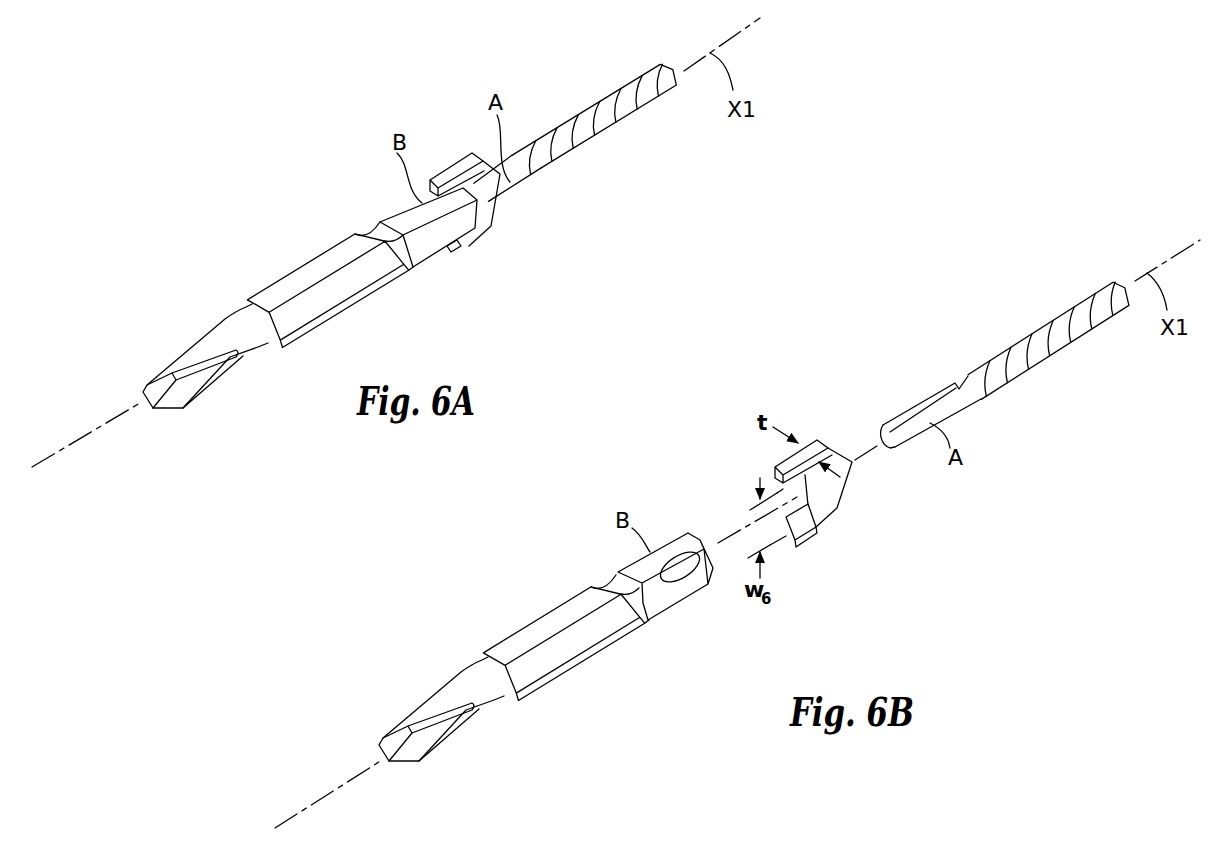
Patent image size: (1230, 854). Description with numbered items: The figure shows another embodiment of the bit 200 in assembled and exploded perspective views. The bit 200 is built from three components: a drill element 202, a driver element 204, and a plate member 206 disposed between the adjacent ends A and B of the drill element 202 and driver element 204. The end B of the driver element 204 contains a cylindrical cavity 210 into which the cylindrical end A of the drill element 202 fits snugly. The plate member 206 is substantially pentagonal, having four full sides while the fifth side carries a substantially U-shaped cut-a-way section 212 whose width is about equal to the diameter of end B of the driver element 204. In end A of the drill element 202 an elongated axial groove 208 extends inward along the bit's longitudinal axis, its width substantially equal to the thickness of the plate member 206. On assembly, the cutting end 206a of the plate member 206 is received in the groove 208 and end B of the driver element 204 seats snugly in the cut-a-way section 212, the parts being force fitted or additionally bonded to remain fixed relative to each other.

In FIG. 6A, the bit 200 is at (203, 248).
In FIG. 6B, the bit 200 is at (405, 562).
In FIG. 6A, the drill element 202 is at (543, 170).
In FIG. 6B, the drill element 202 is at (1033, 362).
In FIG. 6A, the driver element 204 is at (294, 283).
In FIG. 6B, the driver element 204 is at (547, 618).
In FIG. 6A, the plate member 206 is at (490, 225).
In FIG. 6B, the plate member 206 is at (830, 447).
In FIG. 6B, the cutting end of the plate 206a is at (855, 457).
In FIG. 6B, the elongated axial groove 208 is at (940, 397).
In FIG. 6B, the cylindrical cavity 210 is at (699, 540).
In FIG. 6B, the U-shaped cut-a-way section 212 is at (777, 514).